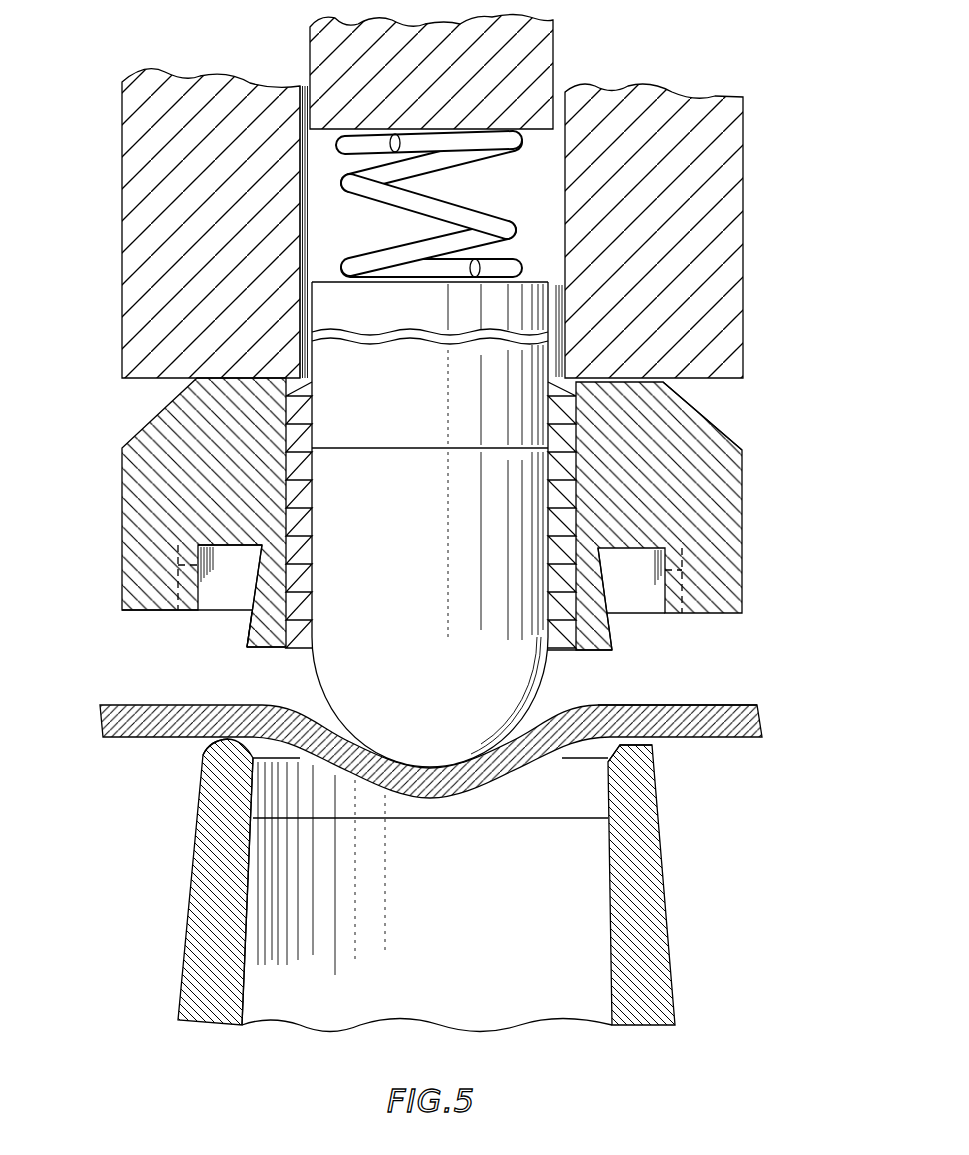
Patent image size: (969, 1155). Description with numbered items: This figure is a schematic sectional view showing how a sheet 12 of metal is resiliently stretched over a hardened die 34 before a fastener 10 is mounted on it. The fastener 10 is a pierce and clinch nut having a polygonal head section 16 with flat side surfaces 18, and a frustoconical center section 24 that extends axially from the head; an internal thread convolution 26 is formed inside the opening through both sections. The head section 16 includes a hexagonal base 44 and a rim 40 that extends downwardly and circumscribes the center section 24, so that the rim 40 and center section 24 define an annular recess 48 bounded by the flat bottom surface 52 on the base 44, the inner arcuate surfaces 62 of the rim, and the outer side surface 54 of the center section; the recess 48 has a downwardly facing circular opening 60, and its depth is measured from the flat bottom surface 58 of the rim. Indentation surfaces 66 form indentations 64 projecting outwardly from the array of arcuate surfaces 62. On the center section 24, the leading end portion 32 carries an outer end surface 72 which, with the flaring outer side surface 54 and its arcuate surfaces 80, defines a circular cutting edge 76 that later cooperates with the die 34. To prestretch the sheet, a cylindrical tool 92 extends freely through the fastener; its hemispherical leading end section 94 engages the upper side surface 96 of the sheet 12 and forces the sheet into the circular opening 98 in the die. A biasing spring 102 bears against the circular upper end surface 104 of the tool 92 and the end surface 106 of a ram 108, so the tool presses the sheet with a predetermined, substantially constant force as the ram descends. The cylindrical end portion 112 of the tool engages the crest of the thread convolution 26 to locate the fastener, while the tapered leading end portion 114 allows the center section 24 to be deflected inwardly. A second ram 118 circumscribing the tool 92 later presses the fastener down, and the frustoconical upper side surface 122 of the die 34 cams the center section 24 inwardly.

The fastener 10 is at (812, 380).
The sheet material 12 is at (745, 702).
The head section 16 is at (752, 460).
The flat side surfaces 18 is at (744, 503).
The center section 24 is at (618, 635).
The internal thread convolution 26 is at (302, 468).
The leading end portion 32 is at (598, 654).
The die 34 is at (680, 930).
The rim 40 is at (713, 598).
The hexagonal base 44 is at (160, 430).
The annular recess 48 is at (206, 606).
The bottom surface 52 is at (180, 520).
The outer side surface 54 is at (240, 635).
The bottom surface of the rim 58 is at (140, 611).
The circular opening 60 is at (645, 615).
The arcuate surfaces 62 is at (196, 558).
The indentations 64 is at (683, 570).
The indentation surfaces 66 is at (178, 565).
The outer end surface 72 is at (272, 650).
The cutting edge 76 is at (240, 653).
The arcuate surfaces 80 is at (220, 560).
The tool 92 is at (545, 364).
The leading end section 94 is at (428, 742).
The upper side surface 96 is at (657, 706).
The circular opening 98 is at (605, 788).
The biasing spring 102 is at (388, 205).
The upper end surface 104 is at (532, 280).
The end surface 106 is at (546, 132).
The ram 108 is at (530, 48).
The cylindrical end portion 112 is at (497, 432).
The leading end portion 114 is at (398, 510).
The ram 118 is at (137, 255).
The frustoconical upper side surface 122 is at (207, 748).